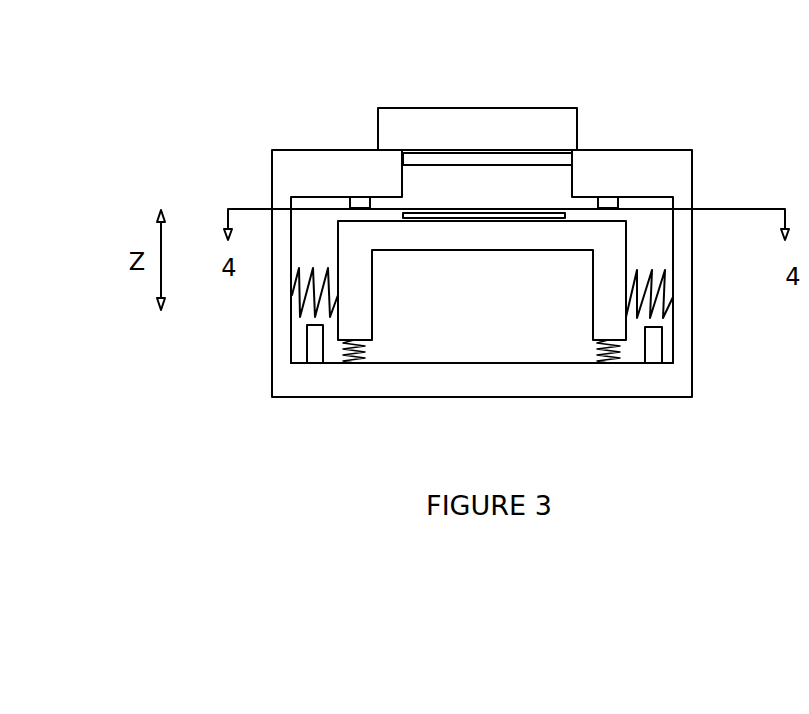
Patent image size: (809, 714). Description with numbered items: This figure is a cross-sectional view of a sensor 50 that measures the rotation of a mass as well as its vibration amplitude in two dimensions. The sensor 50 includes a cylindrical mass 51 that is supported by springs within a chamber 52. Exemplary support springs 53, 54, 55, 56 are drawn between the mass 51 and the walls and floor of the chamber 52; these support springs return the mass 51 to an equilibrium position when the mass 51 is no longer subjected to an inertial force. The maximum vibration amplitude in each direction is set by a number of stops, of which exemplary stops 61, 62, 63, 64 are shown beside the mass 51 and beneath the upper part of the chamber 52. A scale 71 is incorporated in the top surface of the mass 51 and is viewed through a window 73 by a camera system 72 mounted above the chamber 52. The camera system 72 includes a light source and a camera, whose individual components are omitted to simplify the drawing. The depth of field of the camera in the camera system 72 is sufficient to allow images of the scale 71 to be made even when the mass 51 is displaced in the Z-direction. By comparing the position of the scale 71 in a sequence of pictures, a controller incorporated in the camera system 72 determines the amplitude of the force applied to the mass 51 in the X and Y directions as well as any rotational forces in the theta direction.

The sensor 50 is at (208, 88).
The cylindrical mass 51 is at (558, 243).
The chamber 52 is at (660, 249).
The support spring 53 is at (600, 365).
The support spring 54 is at (345, 363).
The support spring 55 is at (312, 272).
The support spring 56 is at (648, 272).
The stop 61 is at (318, 347).
The stop 62 is at (657, 350).
The stop 63 is at (606, 200).
The stop 64 is at (365, 202).
The scale 71 is at (447, 215).
The camera system 72 is at (560, 118).
The window 73 is at (527, 157).